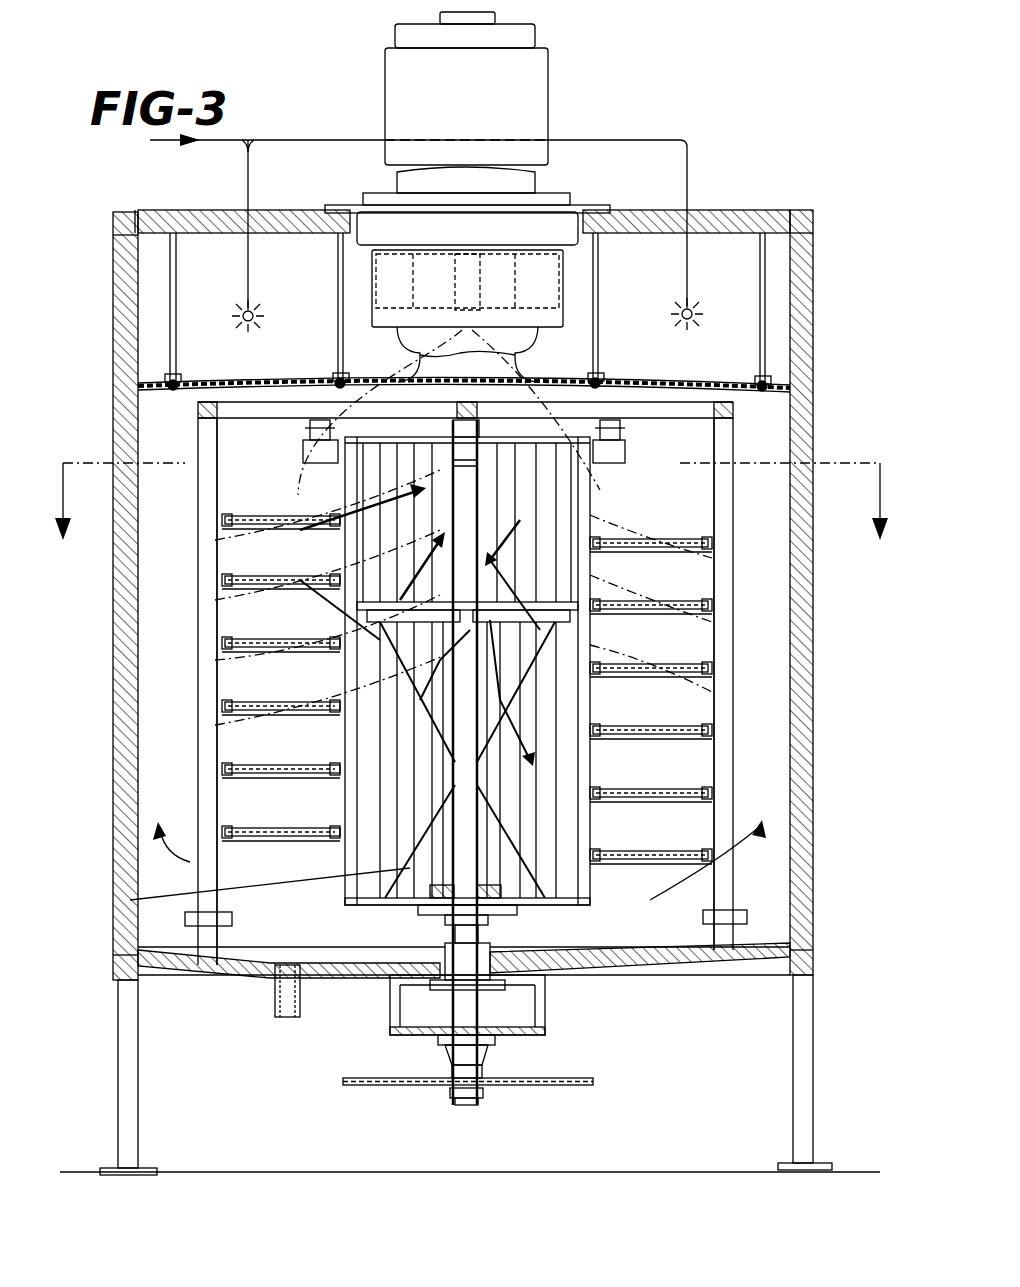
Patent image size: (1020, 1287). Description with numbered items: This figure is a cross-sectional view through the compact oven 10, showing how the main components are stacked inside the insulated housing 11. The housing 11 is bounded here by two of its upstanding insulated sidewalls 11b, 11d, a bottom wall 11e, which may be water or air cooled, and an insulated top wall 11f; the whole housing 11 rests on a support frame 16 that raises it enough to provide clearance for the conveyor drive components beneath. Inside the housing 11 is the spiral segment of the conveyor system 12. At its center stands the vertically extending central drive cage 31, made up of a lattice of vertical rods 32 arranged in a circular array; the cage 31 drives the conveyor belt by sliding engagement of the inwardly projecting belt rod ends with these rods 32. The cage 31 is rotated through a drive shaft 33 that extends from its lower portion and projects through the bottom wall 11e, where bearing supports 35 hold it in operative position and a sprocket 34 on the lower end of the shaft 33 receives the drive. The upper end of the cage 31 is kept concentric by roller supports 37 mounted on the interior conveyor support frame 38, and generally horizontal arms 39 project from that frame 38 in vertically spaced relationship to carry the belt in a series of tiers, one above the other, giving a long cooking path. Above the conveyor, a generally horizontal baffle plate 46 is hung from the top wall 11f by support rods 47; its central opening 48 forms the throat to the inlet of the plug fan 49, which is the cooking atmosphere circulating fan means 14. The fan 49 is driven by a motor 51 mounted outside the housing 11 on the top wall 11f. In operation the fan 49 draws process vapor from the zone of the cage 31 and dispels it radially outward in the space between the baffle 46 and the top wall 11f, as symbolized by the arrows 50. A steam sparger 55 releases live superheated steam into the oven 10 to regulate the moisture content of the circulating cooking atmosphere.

The compact oven 10 is at (708, 108).
The housing 11 is at (818, 238).
The sidewall 11b is at (127, 778).
The sidewall 11d is at (815, 772).
The bottom wall 11e is at (650, 962).
The top wall 11f is at (735, 183).
The conveyor system 12 is at (245, 656).
The cooking atmosphere circulating fan means 14 is at (562, 240).
The support frame 16 is at (135, 1090).
The central drive cage 31 is at (605, 703).
The vertical rods 32 is at (512, 905).
The drive shaft 33 is at (455, 1003).
The sprocket 34 is at (550, 1087).
The bearing supports 35 is at (455, 950).
The roller supports 37 is at (303, 452).
The conveyor support frame 38 is at (215, 556).
The arms 39 is at (232, 768).
The baffle plate 46 is at (668, 383).
The support rods 47 is at (178, 304).
The central opening 48 is at (420, 358).
The plug fan 49 is at (390, 268).
The arrows 50 is at (333, 278).
The motor 51 is at (527, 118).
The steam sparger 55 is at (247, 324).